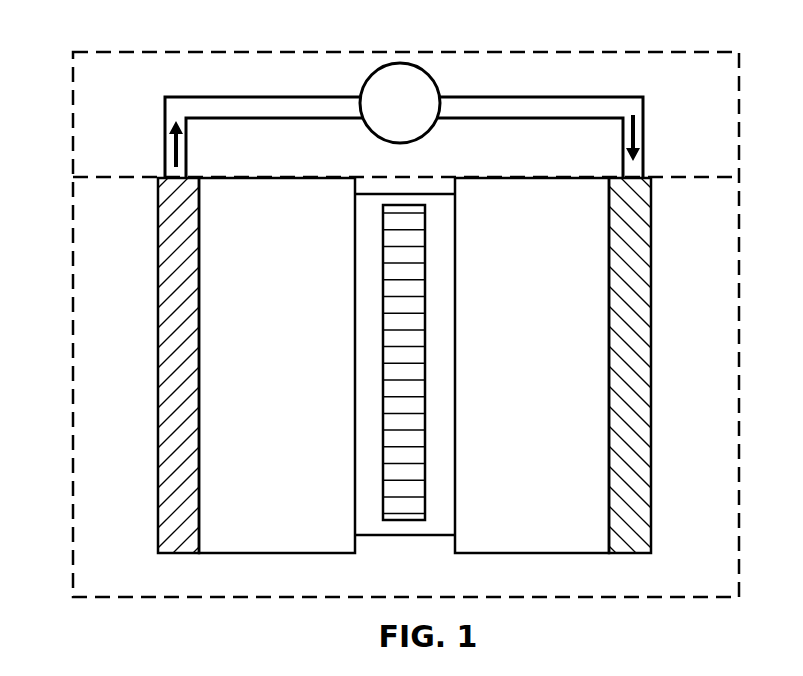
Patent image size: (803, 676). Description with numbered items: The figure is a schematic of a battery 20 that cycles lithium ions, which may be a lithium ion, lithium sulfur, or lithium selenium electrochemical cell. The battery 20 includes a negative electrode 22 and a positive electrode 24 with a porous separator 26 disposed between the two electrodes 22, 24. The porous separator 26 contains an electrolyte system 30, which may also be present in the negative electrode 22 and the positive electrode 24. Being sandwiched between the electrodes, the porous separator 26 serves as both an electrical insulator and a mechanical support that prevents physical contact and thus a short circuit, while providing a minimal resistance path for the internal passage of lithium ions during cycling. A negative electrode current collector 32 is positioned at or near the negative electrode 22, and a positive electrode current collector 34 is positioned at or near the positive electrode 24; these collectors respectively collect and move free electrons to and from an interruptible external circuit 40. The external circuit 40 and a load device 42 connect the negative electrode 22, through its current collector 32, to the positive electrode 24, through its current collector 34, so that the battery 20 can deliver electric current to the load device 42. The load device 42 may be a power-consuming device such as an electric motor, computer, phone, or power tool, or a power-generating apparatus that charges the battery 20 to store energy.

The battery 20 is at (48, 273).
The negative electrode 22 is at (259, 318).
The positive electrode 24 is at (519, 320).
The porous separator 26 is at (410, 537).
The electrolyte system 30 is at (407, 357).
The negative electrode current collector 32 is at (157, 263).
The positive electrode current collector 34 is at (654, 253).
The external circuit 40 is at (127, 49).
The load device 42 is at (386, 115).